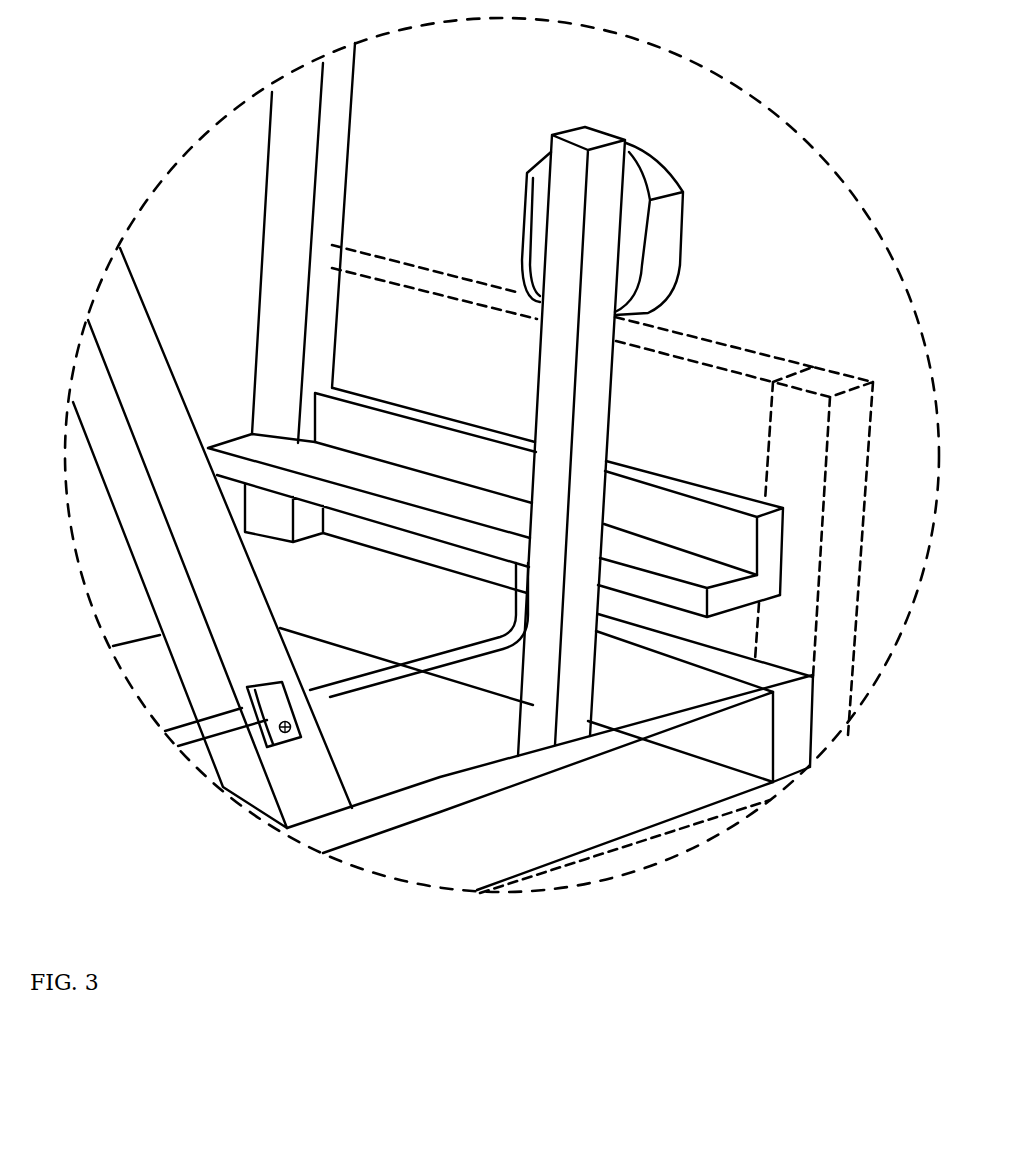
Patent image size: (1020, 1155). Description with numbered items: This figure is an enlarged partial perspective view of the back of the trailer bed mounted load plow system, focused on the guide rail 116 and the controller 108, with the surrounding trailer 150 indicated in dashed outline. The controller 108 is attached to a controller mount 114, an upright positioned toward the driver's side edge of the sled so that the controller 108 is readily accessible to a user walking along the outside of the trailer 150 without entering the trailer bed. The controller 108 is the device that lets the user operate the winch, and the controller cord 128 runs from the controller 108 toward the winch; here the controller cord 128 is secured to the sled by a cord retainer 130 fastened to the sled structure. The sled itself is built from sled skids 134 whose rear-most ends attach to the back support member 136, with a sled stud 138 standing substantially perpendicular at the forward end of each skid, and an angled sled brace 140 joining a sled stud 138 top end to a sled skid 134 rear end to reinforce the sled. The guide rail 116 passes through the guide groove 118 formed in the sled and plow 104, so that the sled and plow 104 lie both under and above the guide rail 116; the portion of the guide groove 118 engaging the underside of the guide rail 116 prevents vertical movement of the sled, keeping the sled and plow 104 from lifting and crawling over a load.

The plow 104 is at (160, 240).
The controller 108 is at (648, 177).
The controller mount 114 is at (580, 137).
The guide rail 116 is at (673, 507).
The guide groove 118 is at (242, 440).
The controller cord 128 is at (410, 667).
The cord retainers 130 is at (274, 744).
The sled skids 134 is at (436, 616).
The back support member 136 is at (632, 804).
The sled stud 138 is at (297, 190).
The angled sled brace 140 is at (150, 340).
The trailer 150 is at (758, 334).